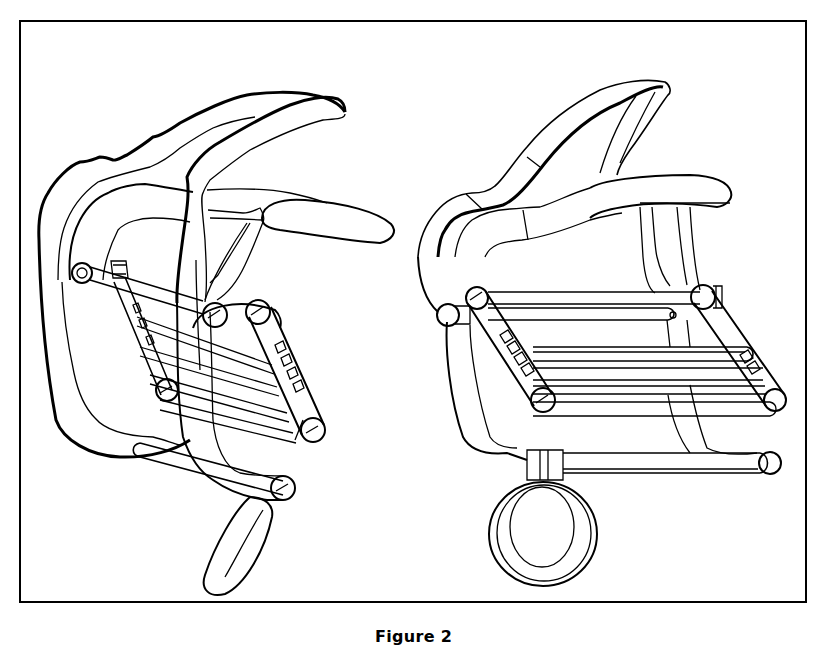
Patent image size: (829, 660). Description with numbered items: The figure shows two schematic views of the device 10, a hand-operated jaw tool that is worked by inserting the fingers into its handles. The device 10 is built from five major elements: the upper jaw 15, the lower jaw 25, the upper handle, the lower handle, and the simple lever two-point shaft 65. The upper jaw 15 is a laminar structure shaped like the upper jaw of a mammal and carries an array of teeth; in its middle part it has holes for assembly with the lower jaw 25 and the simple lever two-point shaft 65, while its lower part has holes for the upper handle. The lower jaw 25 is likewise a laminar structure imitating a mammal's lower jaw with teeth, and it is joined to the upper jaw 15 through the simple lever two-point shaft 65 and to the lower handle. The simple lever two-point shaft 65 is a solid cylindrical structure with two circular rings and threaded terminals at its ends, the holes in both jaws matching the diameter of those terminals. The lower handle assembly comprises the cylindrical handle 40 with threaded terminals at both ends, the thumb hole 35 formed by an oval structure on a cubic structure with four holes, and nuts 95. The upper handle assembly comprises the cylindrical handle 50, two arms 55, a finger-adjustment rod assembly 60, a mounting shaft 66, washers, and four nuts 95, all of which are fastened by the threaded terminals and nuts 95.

The device 10 is at (413, 52).
The upper jaw 15 is at (177, 130).
The lower jaw 25 is at (338, 210).
The thumb hole 35 is at (212, 543).
The handle 40 is at (173, 458).
The handle 50 is at (257, 420).
The arms 55 is at (153, 375).
The finger-adjustment rod assembly 60 is at (137, 350).
The simple lever two-point shaft 65 is at (128, 294).
The mounting shaft 66 is at (166, 278).
The nuts 95 is at (270, 312).